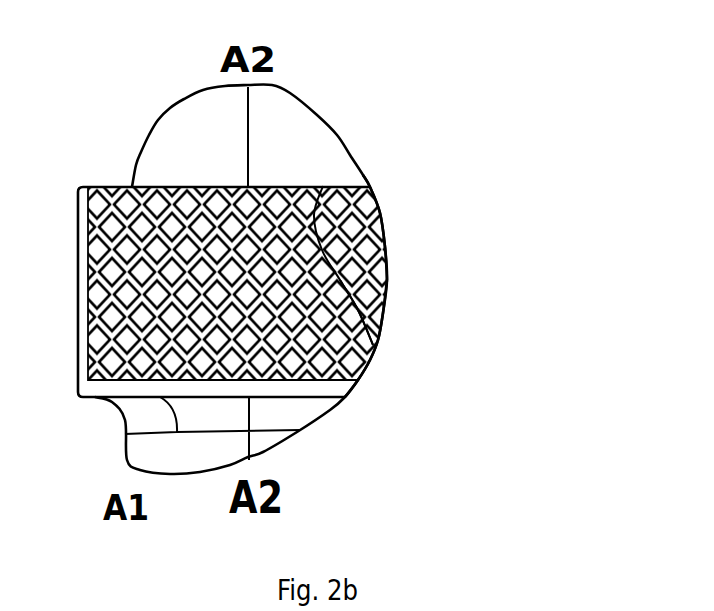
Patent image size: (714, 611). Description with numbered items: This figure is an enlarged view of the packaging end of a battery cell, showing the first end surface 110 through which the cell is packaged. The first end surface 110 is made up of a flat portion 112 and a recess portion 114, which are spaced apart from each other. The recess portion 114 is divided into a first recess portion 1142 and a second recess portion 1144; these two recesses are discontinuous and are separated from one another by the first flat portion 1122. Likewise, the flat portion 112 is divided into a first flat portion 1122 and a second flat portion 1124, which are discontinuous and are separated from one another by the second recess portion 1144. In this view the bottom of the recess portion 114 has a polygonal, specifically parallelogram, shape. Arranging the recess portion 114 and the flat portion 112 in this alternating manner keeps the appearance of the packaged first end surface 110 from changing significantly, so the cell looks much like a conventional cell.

The first end surface 110 is at (178, 188).
The flat portion 112 is at (465, 364).
The first flat portion 1122 is at (365, 322).
The second flat portion 1124 is at (360, 363).
The recess portion 114 is at (450, 199).
The first recess portion 1142 is at (322, 186).
The second recess portion 1144 is at (370, 170).